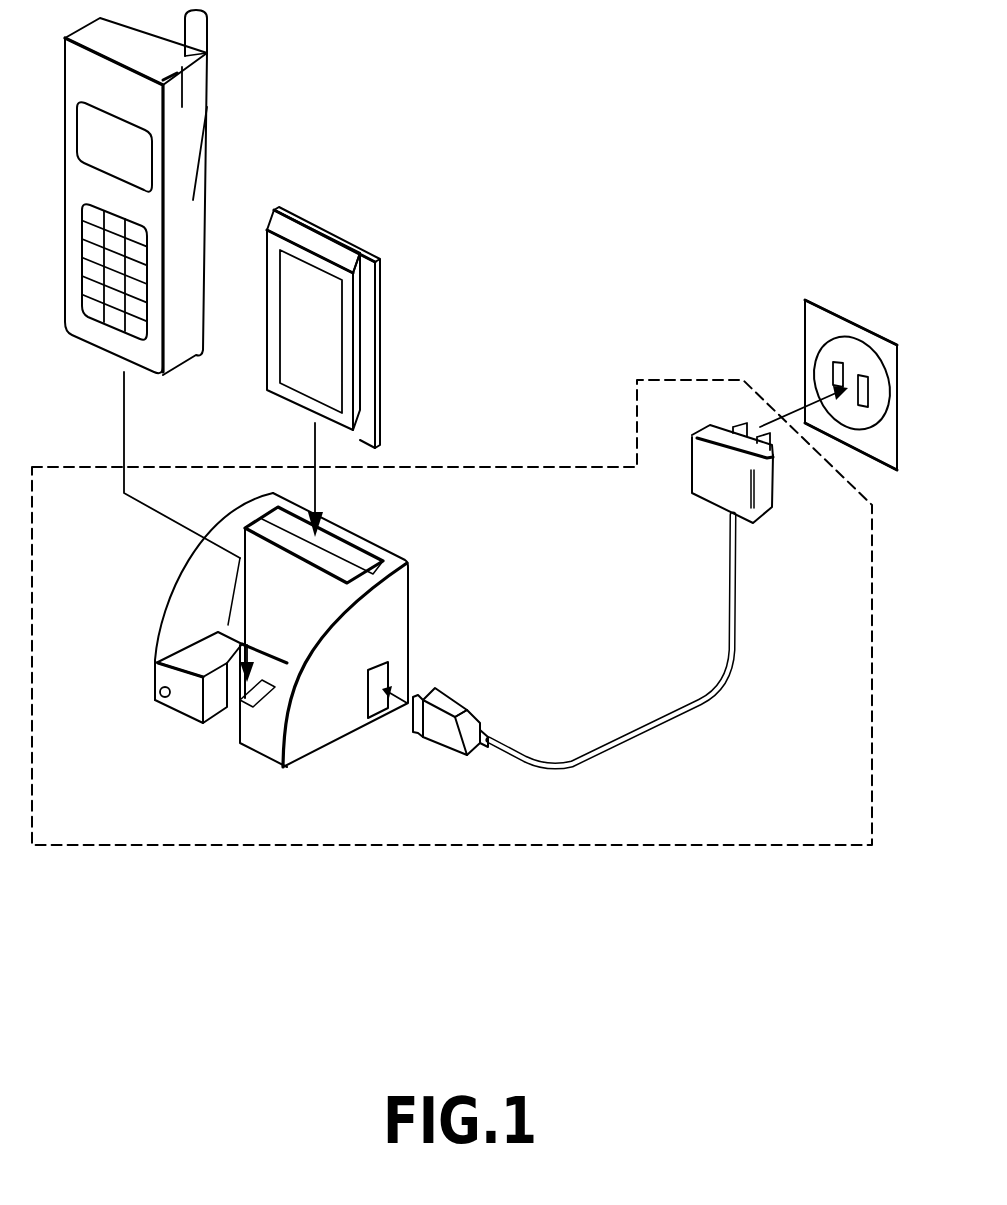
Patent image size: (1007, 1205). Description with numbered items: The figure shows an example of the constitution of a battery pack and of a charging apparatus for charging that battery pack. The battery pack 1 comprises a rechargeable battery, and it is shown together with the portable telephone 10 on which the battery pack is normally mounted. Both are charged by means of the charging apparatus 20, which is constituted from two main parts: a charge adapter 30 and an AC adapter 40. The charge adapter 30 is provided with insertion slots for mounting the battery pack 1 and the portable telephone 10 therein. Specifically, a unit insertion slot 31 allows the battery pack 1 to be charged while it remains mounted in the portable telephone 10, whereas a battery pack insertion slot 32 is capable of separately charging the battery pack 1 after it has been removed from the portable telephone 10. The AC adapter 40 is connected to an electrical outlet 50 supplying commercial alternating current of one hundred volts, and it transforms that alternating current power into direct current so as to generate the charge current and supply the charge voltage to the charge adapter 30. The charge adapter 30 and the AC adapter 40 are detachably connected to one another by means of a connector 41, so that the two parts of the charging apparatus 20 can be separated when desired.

The battery pack 1 is at (318, 227).
The portable telephone 10 is at (200, 100).
The charging apparatus 20 is at (473, 843).
The charge adapter 30 is at (155, 697).
The unit insertion slot 31 is at (310, 583).
The battery pack insertion slot 32 is at (360, 562).
The AC adapter 40 is at (763, 503).
The connector 41 is at (443, 738).
The electrical outlet 50 is at (848, 355).